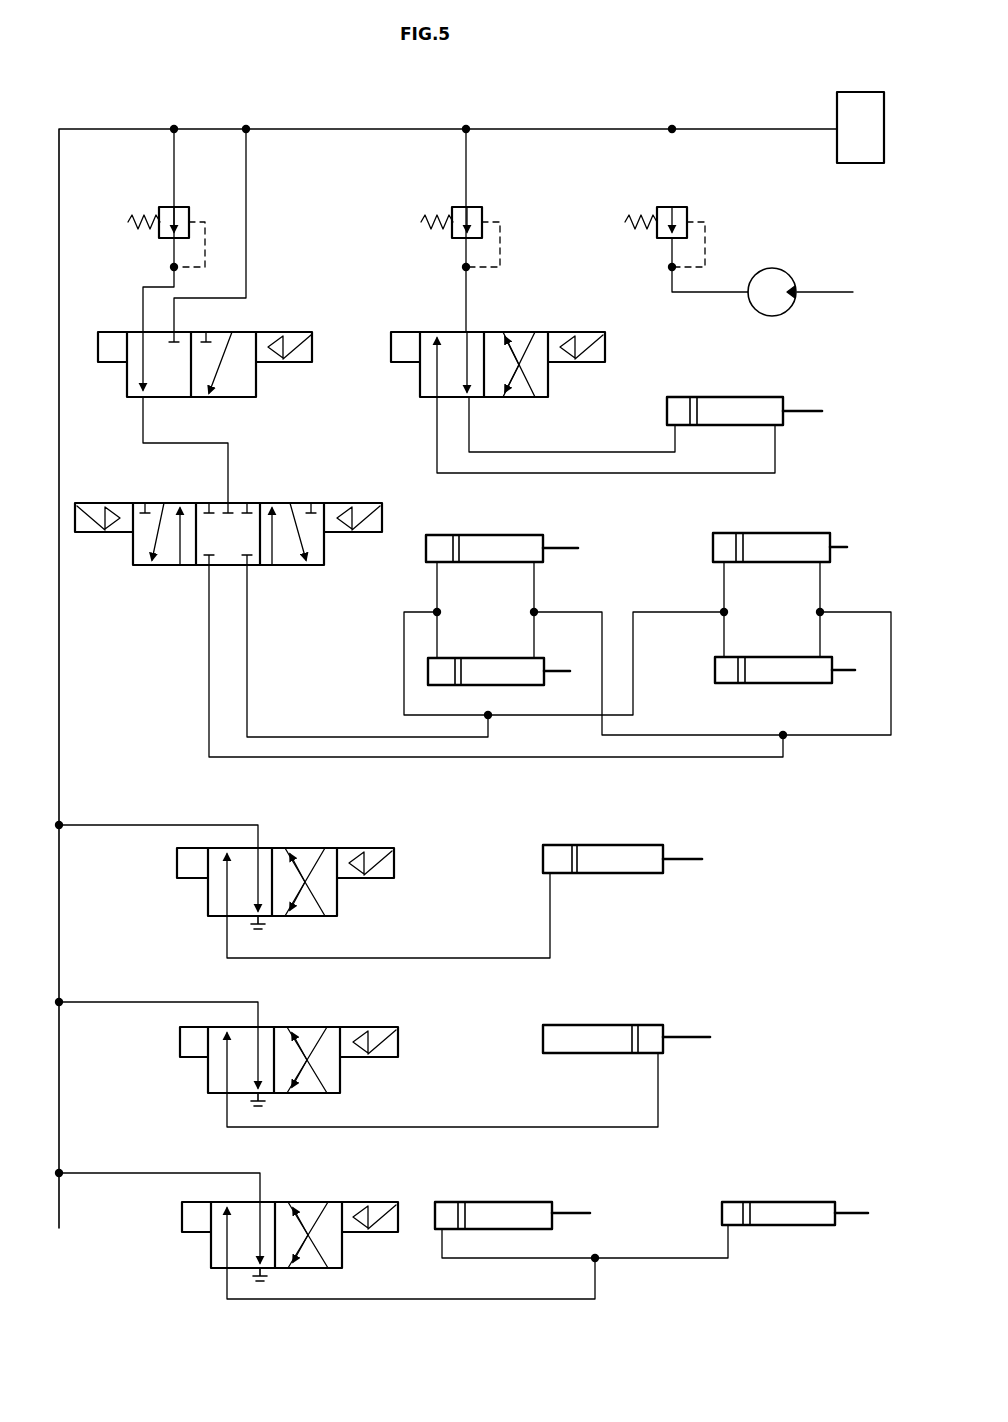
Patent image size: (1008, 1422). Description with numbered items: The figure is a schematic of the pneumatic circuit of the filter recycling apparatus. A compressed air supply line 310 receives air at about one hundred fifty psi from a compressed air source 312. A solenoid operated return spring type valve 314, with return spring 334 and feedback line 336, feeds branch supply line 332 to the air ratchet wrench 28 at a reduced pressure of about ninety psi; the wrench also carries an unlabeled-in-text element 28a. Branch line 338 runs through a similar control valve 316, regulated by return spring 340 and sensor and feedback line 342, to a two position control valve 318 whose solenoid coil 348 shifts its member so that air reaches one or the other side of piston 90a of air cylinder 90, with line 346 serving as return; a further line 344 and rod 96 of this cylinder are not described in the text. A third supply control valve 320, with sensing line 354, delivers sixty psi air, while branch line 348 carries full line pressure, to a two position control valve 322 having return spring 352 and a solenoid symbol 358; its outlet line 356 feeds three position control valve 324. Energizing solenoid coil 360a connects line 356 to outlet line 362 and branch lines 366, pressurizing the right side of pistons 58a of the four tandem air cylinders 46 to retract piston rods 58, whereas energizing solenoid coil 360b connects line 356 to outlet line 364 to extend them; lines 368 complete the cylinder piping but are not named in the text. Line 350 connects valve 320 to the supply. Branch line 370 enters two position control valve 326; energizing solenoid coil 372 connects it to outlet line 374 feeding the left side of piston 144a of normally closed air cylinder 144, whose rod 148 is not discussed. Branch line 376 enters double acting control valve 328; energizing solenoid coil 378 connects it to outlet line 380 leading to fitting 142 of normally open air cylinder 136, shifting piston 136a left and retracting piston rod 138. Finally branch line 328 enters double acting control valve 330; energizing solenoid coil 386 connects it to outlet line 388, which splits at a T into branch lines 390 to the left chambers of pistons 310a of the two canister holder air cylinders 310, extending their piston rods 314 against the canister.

The compressed air supply line 310 is at (532, 126).
The piston 310a is at (470, 1206).
The compressed air source 312 is at (837, 105).
The solenoid operated return spring type valve 314 is at (657, 240).
The solenoid operated return spring type control valve 316 is at (478, 208).
The two position solenoid operated control valve 318 is at (490, 333).
The solenoid operated return spring type compressed air supply control valve 320 is at (188, 208).
The two position solenoid operated control valve 322 is at (232, 333).
The three position solenoid operated control valve 324 is at (300, 504).
The two position solenoid operated control valve 326 is at (304, 848).
The double acting solenoid operated control valve 328 is at (276, 1027).
The double acting solenoid operated control valve 330 is at (312, 1202).
The branch supply line 332 is at (670, 286).
The return spring 334 is at (646, 212).
The feedback line 336 is at (704, 242).
The branch line 338 is at (467, 176).
The return spring 340 is at (421, 222).
The sensor and feedback line 342 is at (500, 240).
The line 344 is at (548, 452).
The line 346 is at (744, 472).
The two position solenoid coil 348 is at (247, 200).
The line 350 is at (176, 177).
The return spring 352 is at (146, 214).
The sensing line 354 is at (206, 242).
The line 356 is at (228, 470).
The solenoid 358 is at (283, 364).
The solenoid coil 360a is at (93, 502).
The solenoid coil 360b is at (378, 482).
The outlet line 362 is at (209, 624).
The outlet line 364 is at (248, 642).
The branch lines 366 is at (700, 735).
The line 368 is at (404, 698).
The branch line 370 is at (146, 822).
The solenoid coil 372 is at (384, 846).
The outlet line 374 is at (384, 958).
The branch line 376 is at (92, 1002).
The solenoid coil 378 is at (372, 1058).
The outlet line 380 is at (370, 1127).
The solenoid coil 386 is at (371, 1202).
The outlet line 388 is at (422, 1299).
The branch lines 390 is at (530, 1260).
The air ratchet wrench 28 is at (752, 308).
The motor outlet 28a is at (783, 302).
The air cylinder 90 is at (722, 395).
The piston 90a is at (688, 400).
The piston rod 96 is at (797, 408).
The tandem air cylinders 46 is at (504, 534).
The piston rods 58 is at (560, 548).
The pistons 58a is at (456, 540).
The single acting spring return normally open air cylinder 136 is at (560, 1024).
The piston 136a is at (628, 1026).
The piston rod 138 is at (688, 1037).
The fitting 142 is at (660, 1056).
The single acting spring return normally closed air cylinder 144 is at (616, 845).
The piston 144a is at (592, 832).
The piston rod 148 is at (680, 859).